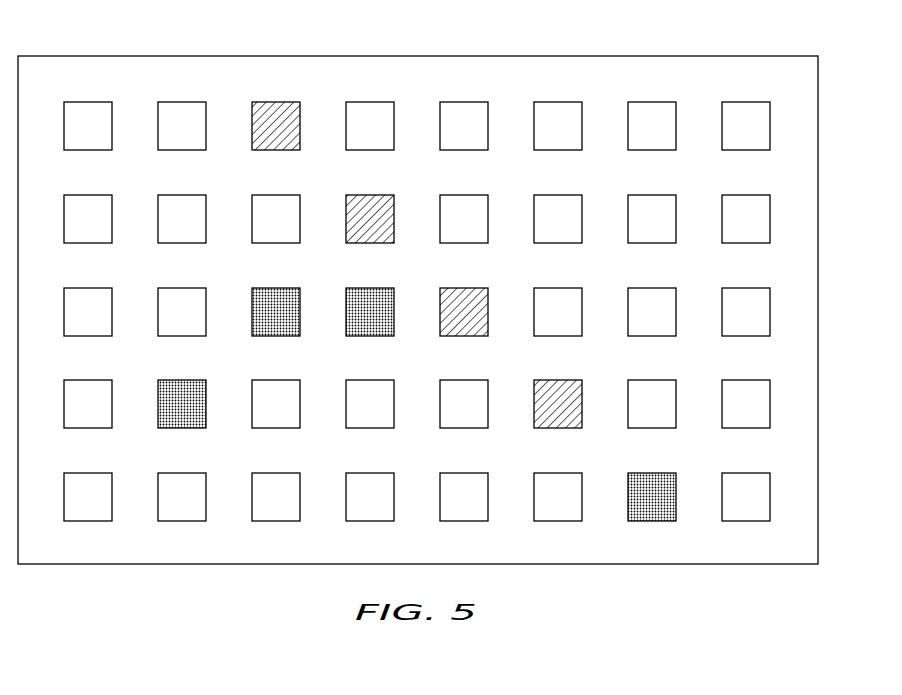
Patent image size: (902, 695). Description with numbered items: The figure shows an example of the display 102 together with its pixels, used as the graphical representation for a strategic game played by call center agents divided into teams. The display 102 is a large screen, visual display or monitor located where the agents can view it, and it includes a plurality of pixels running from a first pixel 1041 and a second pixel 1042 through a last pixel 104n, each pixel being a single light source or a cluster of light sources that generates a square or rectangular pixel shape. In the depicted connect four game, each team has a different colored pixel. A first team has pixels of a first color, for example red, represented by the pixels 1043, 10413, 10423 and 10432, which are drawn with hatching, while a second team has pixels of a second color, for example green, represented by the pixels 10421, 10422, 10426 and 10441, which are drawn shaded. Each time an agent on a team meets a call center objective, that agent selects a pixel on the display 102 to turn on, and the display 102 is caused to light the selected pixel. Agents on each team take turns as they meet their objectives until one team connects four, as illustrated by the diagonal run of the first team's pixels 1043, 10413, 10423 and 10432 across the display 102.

The display 102 is at (591, 55).
The pixel 1041 is at (92, 102).
The pixel 1042 is at (182, 102).
The pixel 1043 is at (277, 102).
The pixel 10413 is at (371, 195).
The pixel 10421 is at (275, 288).
The pixel 10422 is at (373, 288).
The pixel 10423 is at (465, 288).
The pixel 10426 is at (182, 380).
The pixel 10432 is at (560, 380).
The pixel 10441 is at (653, 473).
The pixel 104n is at (770, 495).